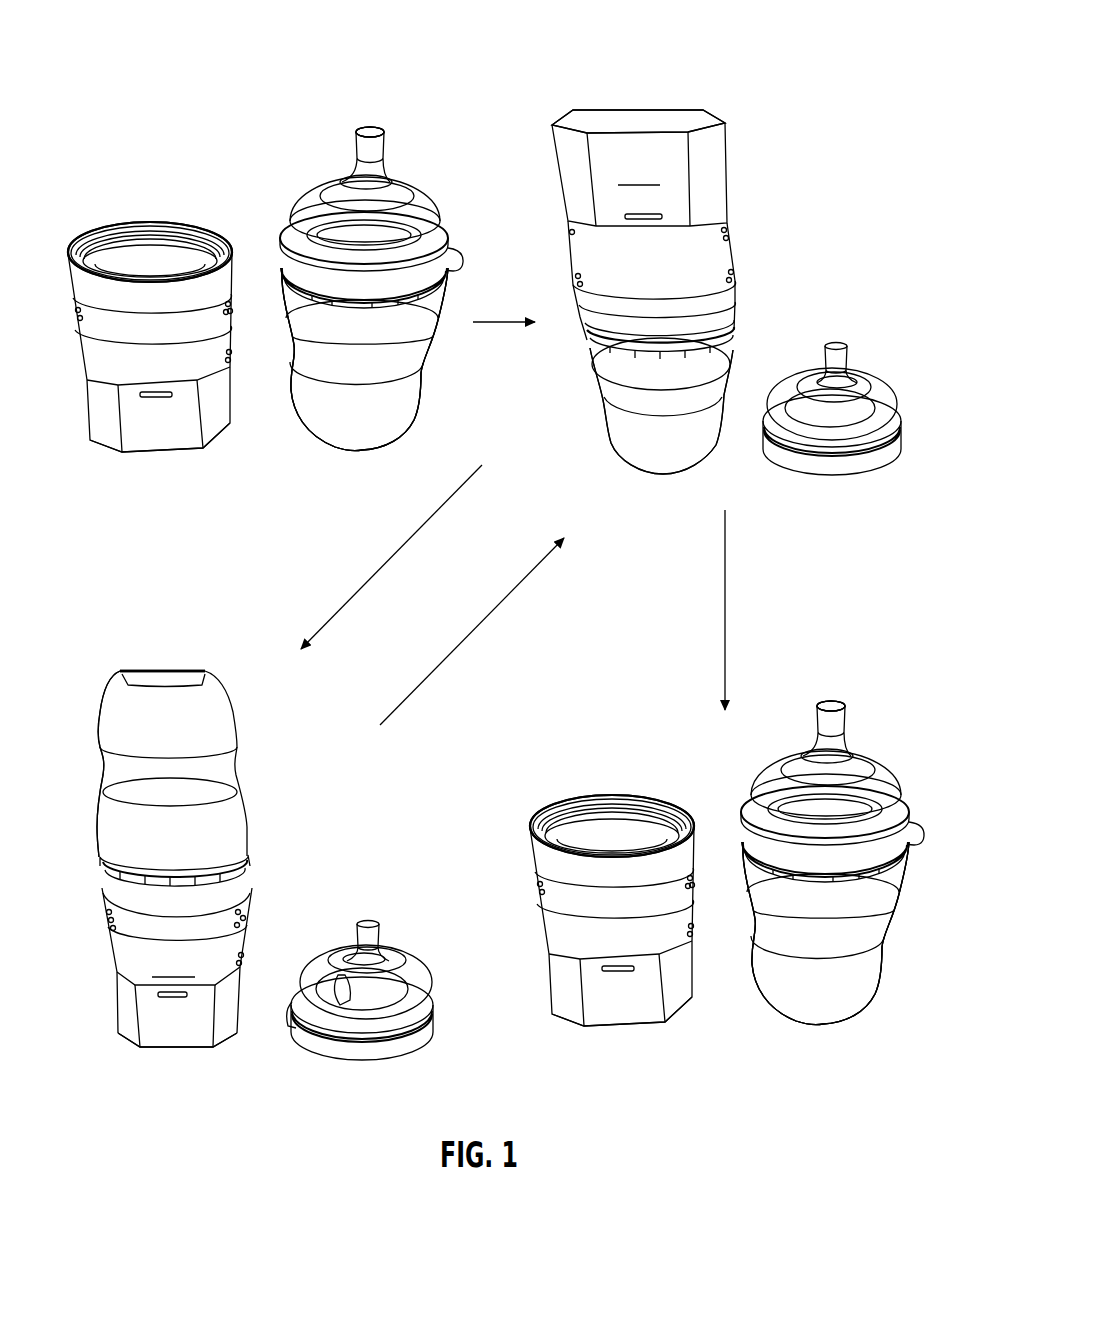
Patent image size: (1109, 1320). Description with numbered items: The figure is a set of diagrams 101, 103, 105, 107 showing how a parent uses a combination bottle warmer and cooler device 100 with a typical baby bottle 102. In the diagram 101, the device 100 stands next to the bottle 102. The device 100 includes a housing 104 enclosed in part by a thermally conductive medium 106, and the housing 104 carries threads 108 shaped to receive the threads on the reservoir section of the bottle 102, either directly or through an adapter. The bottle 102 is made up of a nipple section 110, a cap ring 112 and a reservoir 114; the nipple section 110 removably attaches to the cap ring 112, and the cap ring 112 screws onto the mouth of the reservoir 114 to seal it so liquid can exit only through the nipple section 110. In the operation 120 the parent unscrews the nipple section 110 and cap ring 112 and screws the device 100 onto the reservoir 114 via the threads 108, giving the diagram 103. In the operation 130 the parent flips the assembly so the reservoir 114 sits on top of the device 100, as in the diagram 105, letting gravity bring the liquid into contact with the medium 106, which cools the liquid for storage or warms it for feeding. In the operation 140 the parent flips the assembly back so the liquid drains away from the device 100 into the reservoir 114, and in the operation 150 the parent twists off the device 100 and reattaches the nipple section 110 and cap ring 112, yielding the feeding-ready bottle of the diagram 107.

The combination bottle warmer and cooler device 100 is at (376, 533).
The diagram 101 is at (141, 99).
The baby bottle 102 is at (442, 180).
The diagram 103 is at (754, 62).
The housing 104 is at (436, 604).
The diagram 105 is at (122, 608).
The thermally conductive medium 106 is at (150, 217).
The diagram 107 is at (852, 660).
The threads 108 is at (145, 223).
The nipple section 110 is at (337, 190).
The cap ring 112 is at (455, 245).
The reservoir 114 is at (432, 400).
The operation 120 is at (502, 322).
The operation 130 is at (348, 598).
The operation 140 is at (453, 647).
The operation 150 is at (725, 572).